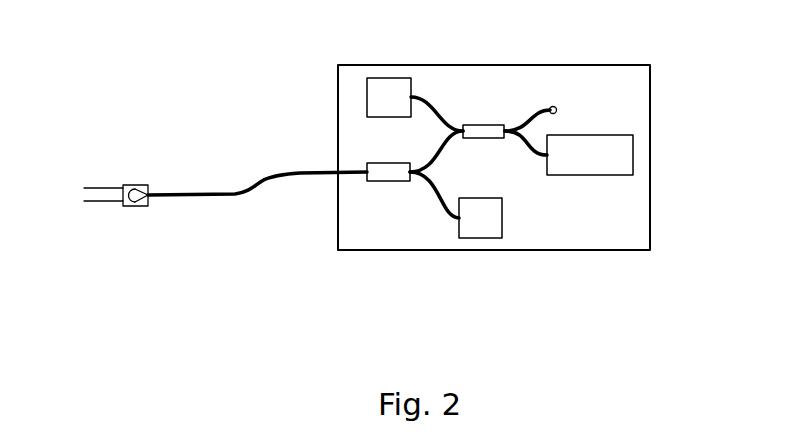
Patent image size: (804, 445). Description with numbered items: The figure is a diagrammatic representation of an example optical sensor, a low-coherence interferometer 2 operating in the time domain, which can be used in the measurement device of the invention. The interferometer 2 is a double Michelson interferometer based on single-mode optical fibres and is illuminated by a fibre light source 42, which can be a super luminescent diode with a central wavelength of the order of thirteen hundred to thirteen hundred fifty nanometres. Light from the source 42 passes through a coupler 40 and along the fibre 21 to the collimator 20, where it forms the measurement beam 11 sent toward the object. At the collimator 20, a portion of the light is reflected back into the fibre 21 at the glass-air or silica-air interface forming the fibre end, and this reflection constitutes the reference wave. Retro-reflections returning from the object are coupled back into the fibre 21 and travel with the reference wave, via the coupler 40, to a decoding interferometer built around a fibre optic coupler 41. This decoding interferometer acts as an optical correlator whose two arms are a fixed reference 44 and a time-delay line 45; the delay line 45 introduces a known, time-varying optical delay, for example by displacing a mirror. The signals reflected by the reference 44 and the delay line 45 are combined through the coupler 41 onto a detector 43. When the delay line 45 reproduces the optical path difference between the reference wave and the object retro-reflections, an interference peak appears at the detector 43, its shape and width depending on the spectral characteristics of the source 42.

The interferometer 2 is at (655, 158).
The measurement beam 11 is at (96, 188).
The collimator 20 is at (134, 207).
The fibre 21 is at (180, 197).
The coupler 40 is at (388, 181).
The fibre optic coupler 41 is at (483, 124).
The light source 42 is at (483, 238).
The detector 43 is at (388, 78).
The fixed reference 44 is at (555, 106).
The time-delay line 45 is at (590, 135).